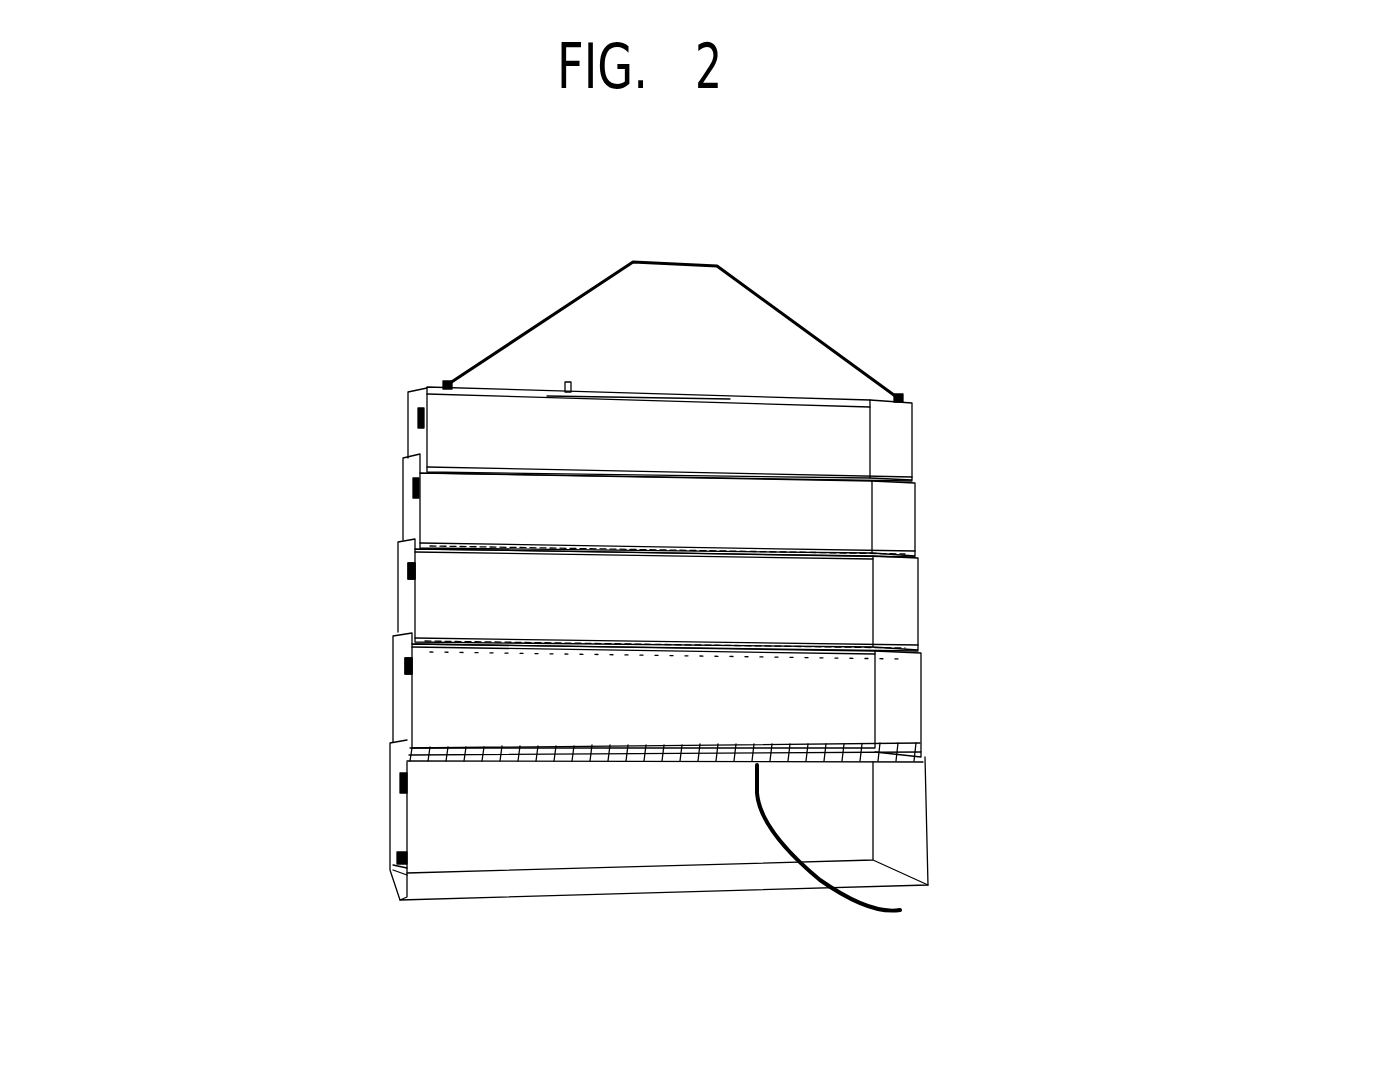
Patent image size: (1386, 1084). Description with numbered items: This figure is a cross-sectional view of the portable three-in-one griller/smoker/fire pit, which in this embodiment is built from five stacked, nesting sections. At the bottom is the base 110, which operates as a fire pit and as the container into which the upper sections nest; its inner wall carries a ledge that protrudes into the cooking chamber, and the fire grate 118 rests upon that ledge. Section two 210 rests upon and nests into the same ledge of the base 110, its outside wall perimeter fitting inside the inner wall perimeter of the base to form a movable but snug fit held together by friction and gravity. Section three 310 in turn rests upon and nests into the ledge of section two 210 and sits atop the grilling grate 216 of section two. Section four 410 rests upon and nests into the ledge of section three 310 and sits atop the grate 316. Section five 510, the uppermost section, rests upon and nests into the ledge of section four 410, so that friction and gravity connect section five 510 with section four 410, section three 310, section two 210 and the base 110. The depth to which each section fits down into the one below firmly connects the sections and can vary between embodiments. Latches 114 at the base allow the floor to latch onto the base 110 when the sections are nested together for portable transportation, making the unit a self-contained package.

The section five 510 is at (923, 420).
The section four 410 is at (927, 500).
The section three 310 is at (937, 587).
The section two 210 is at (932, 680).
The base 110 is at (945, 790).
The fire grate 118 is at (900, 910).
The grate 316 is at (503, 555).
The grilling grate 216 is at (488, 655).
The latches 114 is at (395, 862).